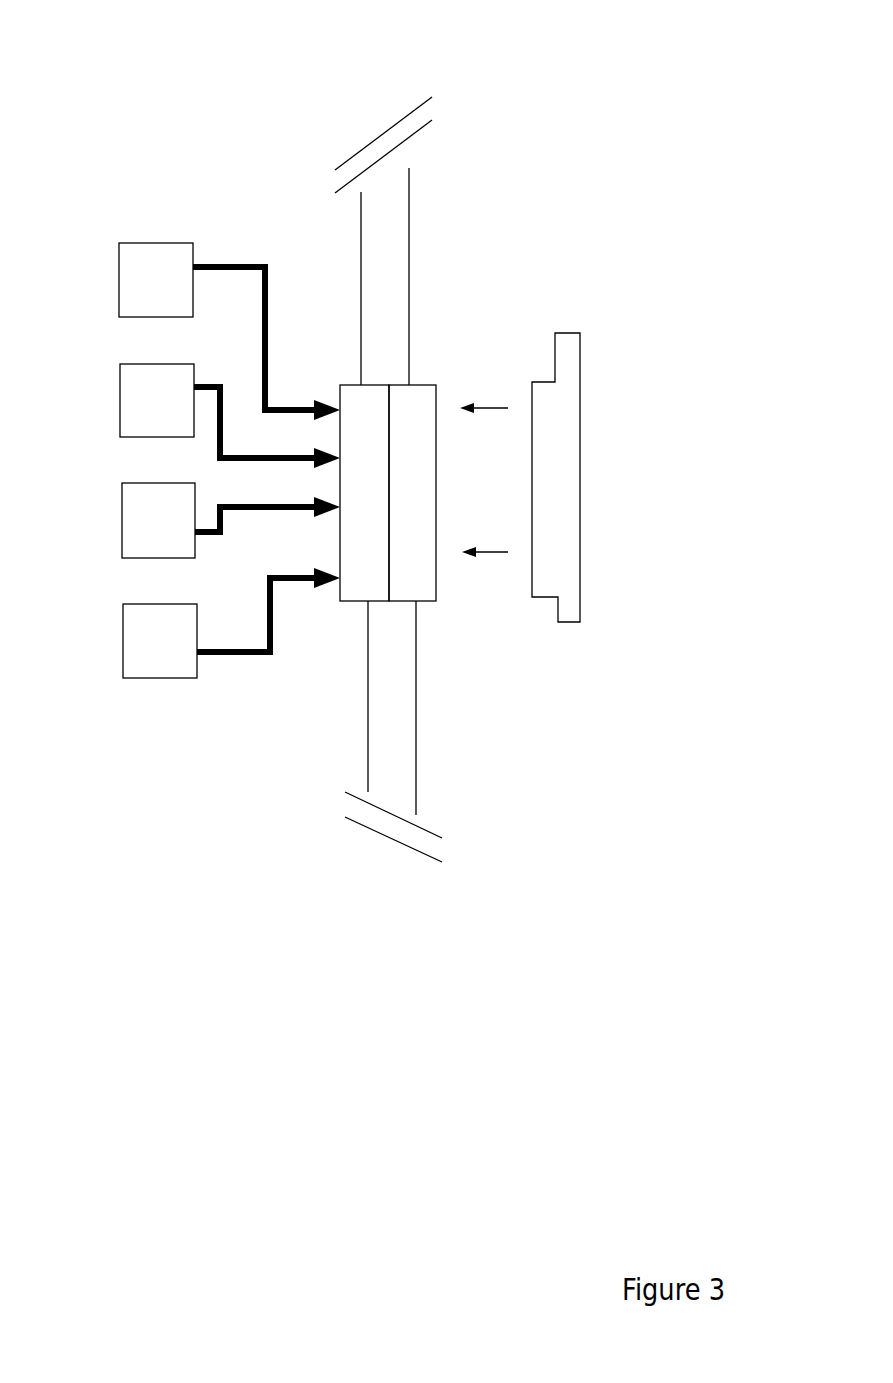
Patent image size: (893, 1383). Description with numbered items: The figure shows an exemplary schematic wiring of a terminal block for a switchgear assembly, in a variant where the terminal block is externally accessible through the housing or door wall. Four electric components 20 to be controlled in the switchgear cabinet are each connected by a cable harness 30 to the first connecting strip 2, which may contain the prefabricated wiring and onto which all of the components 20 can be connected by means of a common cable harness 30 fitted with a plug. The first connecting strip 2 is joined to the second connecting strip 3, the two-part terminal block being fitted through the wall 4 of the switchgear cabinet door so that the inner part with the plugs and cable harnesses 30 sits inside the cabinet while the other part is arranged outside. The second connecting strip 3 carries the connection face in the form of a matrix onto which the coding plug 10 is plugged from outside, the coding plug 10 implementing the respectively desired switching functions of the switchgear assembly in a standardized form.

The first connecting strip 2 is at (362, 410).
The second connecting strip 3 is at (412, 410).
The wall of the switchgear cabinet door 4 is at (385, 242).
The coding plug 10 is at (555, 453).
The electric components 20 is at (143, 268).
The cable harness 30 is at (272, 510).